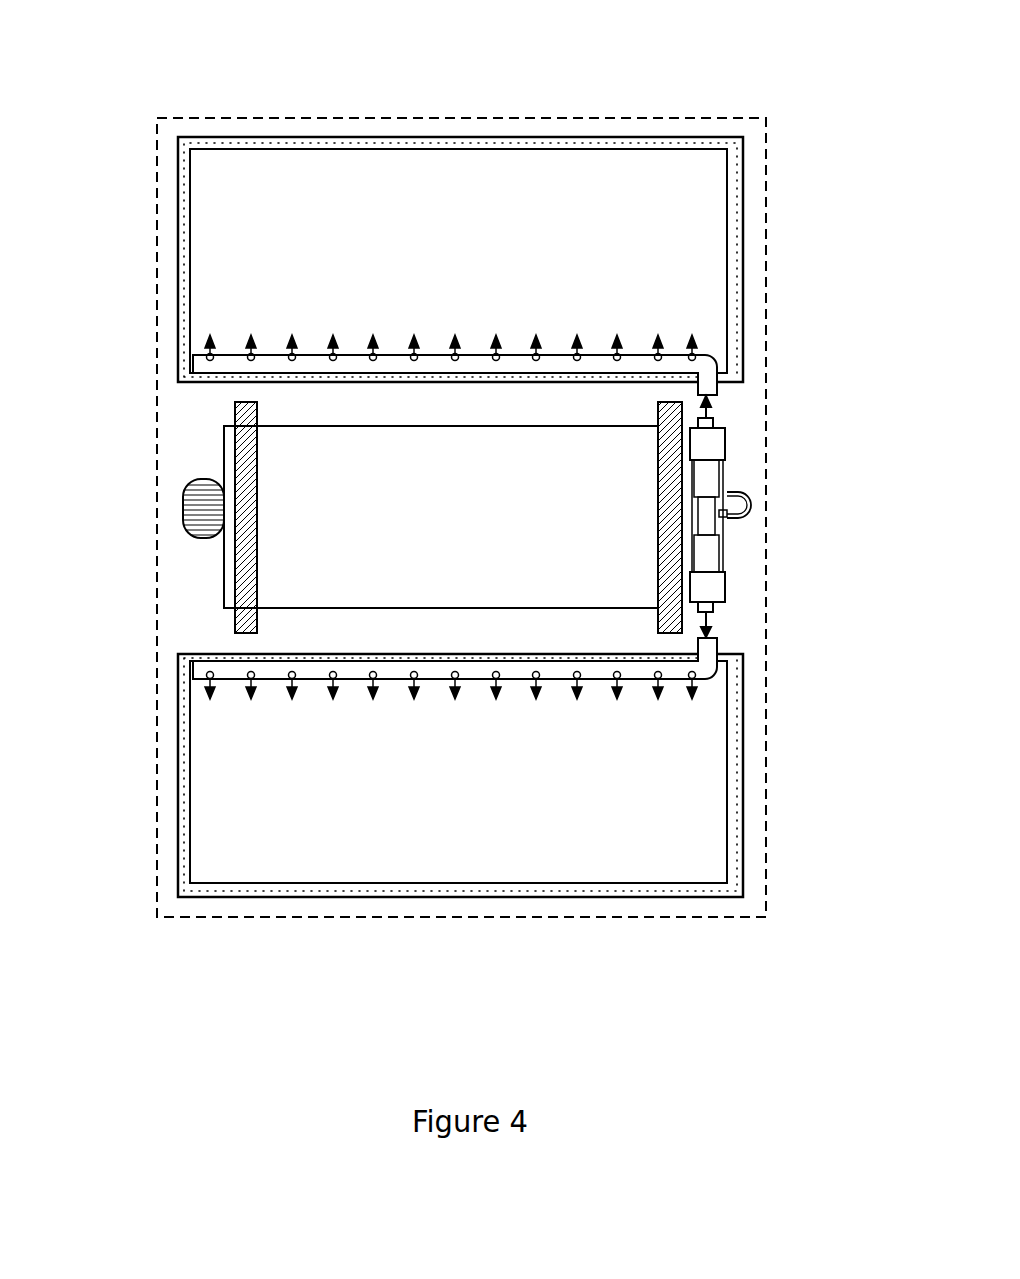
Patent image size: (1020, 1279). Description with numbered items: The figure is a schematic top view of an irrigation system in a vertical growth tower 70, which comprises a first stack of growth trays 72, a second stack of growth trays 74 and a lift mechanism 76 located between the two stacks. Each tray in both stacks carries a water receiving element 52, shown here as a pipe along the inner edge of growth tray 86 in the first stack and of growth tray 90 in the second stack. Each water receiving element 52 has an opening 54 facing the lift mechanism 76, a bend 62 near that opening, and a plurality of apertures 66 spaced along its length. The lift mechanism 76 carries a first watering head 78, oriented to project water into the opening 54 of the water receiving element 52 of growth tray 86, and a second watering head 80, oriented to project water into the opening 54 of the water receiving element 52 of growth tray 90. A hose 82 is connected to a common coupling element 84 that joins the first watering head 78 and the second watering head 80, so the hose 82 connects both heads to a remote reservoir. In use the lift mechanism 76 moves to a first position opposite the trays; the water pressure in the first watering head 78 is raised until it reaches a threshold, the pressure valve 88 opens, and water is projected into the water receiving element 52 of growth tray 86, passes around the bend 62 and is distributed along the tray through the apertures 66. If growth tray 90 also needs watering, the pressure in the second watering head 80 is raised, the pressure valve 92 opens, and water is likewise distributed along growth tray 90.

The water receiving element 52 is at (191, 360).
The opening 54 is at (717, 390).
The bend 62 is at (715, 353).
The plurality of apertures 66 is at (207, 317).
The vertical growth tower 70 is at (308, 118).
The first stack of growth trays 72 is at (794, 136).
The second stack of growth trays 74 is at (802, 650).
The lift mechanism 76 is at (132, 394).
The first watering head 78 is at (707, 424).
The second watering head 80 is at (715, 610).
The hose 82 is at (753, 493).
The common coupling element 84 is at (712, 527).
The growth tray 86 is at (440, 219).
The pressure valve 88 is at (713, 445).
The growth tray 90 is at (435, 852).
The pressure valve 92 is at (717, 583).